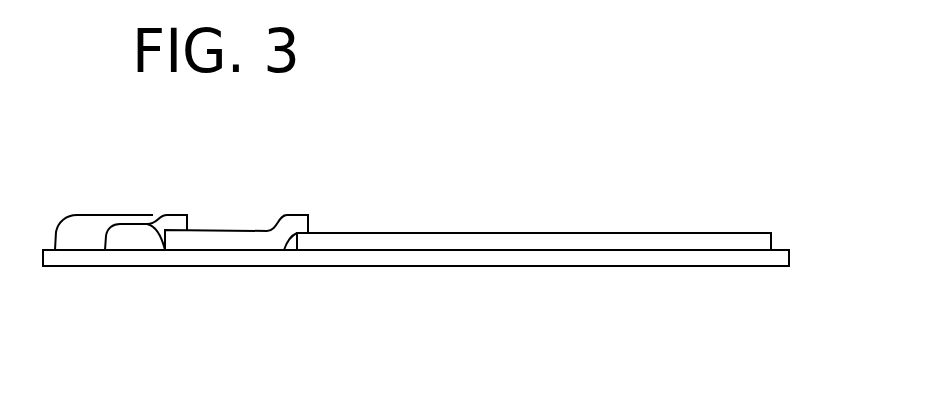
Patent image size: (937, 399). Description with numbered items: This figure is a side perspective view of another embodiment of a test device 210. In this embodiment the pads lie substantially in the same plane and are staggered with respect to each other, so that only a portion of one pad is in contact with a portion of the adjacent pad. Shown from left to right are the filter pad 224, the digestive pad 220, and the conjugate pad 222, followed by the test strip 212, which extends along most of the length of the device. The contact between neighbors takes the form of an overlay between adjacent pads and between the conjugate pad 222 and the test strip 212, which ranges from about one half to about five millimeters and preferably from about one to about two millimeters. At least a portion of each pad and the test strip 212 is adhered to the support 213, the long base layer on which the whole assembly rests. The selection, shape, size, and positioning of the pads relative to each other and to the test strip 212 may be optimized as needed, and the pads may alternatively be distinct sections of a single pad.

The device 210 is at (584, 150).
The test strip 212 is at (766, 242).
The support 213 is at (788, 257).
The digestive pad 220 is at (176, 223).
The conjugate pad 222 is at (294, 222).
The filter pad 224 is at (86, 228).